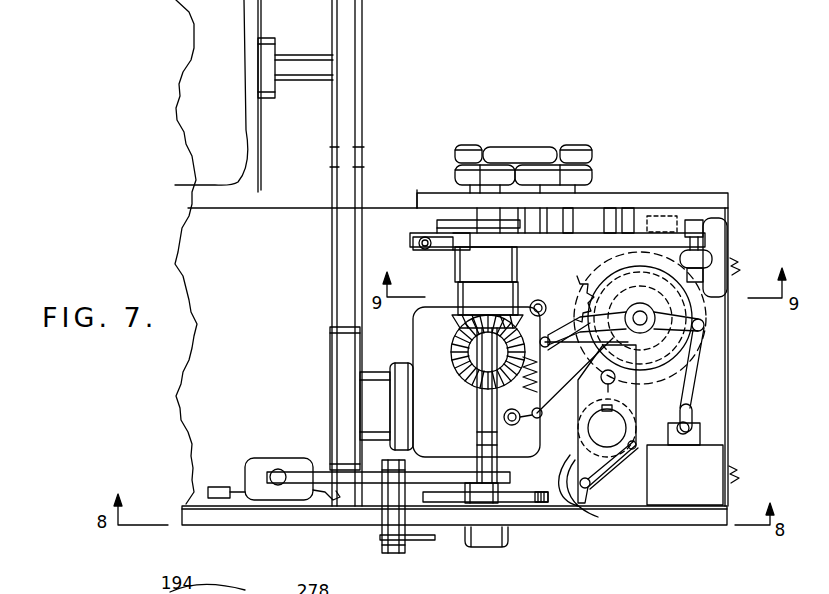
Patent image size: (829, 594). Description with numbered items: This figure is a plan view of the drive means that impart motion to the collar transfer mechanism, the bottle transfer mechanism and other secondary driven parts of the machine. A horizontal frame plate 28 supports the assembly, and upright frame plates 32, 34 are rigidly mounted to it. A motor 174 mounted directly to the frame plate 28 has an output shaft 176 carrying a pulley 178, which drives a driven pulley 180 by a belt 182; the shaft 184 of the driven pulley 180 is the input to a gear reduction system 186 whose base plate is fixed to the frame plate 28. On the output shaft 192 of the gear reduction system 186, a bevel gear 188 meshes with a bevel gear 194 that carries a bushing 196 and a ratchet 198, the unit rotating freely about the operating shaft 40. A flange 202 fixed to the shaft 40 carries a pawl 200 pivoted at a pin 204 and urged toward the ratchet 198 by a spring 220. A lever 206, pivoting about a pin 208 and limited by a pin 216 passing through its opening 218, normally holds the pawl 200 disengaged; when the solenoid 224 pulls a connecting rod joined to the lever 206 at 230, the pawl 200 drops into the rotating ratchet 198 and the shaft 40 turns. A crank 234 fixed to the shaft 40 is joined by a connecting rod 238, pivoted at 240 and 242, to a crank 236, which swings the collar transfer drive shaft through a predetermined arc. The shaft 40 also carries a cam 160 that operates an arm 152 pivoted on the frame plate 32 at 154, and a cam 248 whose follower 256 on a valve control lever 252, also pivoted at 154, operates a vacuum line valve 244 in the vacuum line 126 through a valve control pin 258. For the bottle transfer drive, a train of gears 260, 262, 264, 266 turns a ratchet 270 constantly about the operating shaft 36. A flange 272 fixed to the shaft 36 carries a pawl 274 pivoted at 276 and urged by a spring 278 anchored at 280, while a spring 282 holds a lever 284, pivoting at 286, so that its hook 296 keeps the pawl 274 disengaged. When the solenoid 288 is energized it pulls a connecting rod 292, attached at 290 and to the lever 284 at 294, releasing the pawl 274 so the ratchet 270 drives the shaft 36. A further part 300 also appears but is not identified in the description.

The horizontal frame plate 28 is at (223, 278).
The upright frame plate 32 is at (222, 525).
The upright frame plate 34 is at (442, 193).
The operating shaft 36 is at (597, 438).
The operating shaft 40 is at (477, 410).
The vacuum line 126 is at (223, 487).
The arm 152 is at (412, 541).
The pivot 154 is at (396, 553).
The cam 160 is at (495, 537).
The motor 174 is at (190, 129).
The output shaft 176 is at (282, 76).
The pulley 178 is at (357, 23).
The driven pulley 180 is at (330, 373).
The belt 182 is at (352, 113).
The shaft 184 is at (397, 372).
The gear reduction system 186 is at (421, 415).
The bevel gear 188 is at (458, 364).
The output shaft 192 is at (455, 345).
The bevel gear 194 is at (455, 320).
The bushing 196 is at (471, 305).
The ratchet 198 is at (474, 280).
The pawl 200 is at (440, 251).
The flange 202 is at (445, 223).
The pin 204 is at (413, 240).
The lever 206 is at (607, 243).
The pin 208 is at (628, 215).
The pin 216 is at (573, 227).
The opening 218 is at (570, 247).
The spring 220 is at (418, 245).
The solenoid 224 is at (712, 222).
The connection point 230 is at (712, 238).
The crank 234 is at (490, 172).
The crank 236 is at (555, 177).
The connecting rod 238 is at (520, 150).
The pivot point 240 is at (470, 145).
The pivot point 242 is at (578, 147).
The vacuum line valve 244 is at (252, 465).
The cam 248 is at (548, 503).
The valve control lever 252 is at (325, 472).
The cam follower 256 is at (482, 505).
The valve control pin 258 is at (279, 469).
The gear 260 is at (528, 298).
The gear 262 is at (578, 278).
The gear 264 is at (690, 308).
The gear 266 is at (640, 412).
The ratchet 270 is at (650, 477).
The flange 272 is at (636, 446).
The pawl 274 is at (586, 406).
The pivot point 276 is at (615, 380).
The spring 278 is at (547, 492).
The anchor point 280 is at (598, 517).
The spring 282 is at (478, 437).
The lever 284 is at (596, 336).
The pivot point 286 is at (646, 320).
The solenoid 288 is at (683, 500).
The connection point 290 is at (700, 431).
The connecting rod 292 is at (692, 416).
The connection point 294 is at (705, 330).
The hook 296 is at (582, 345).
The pawl 300 is at (522, 430).